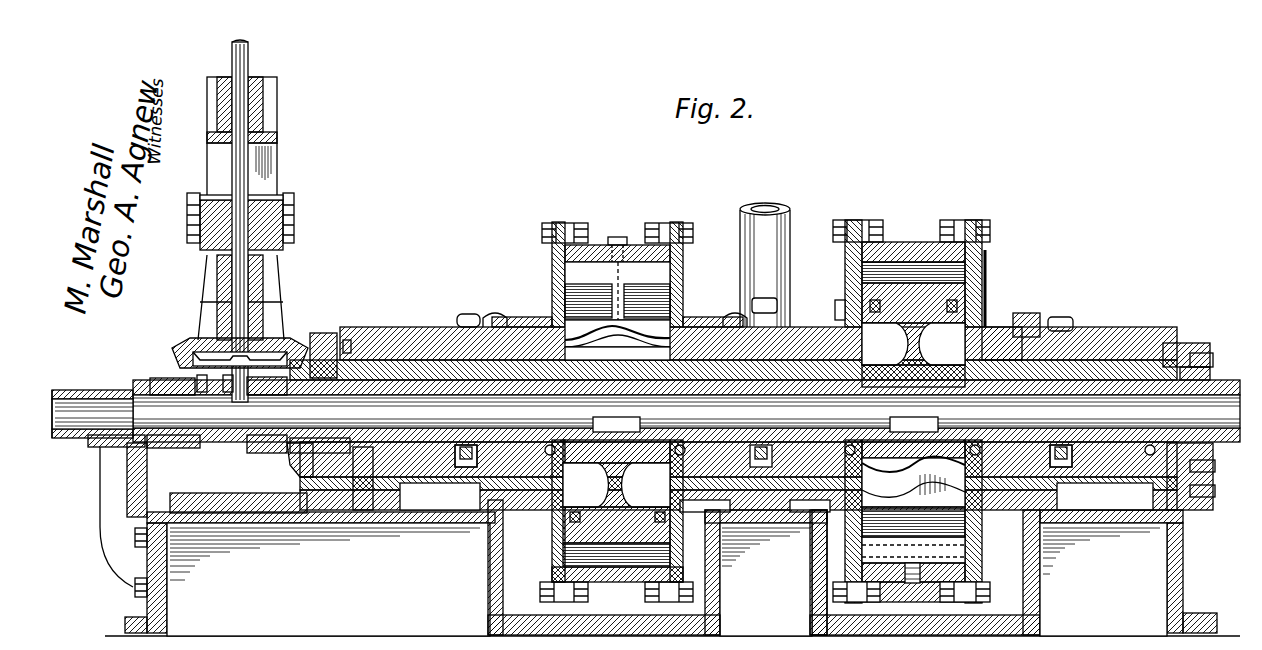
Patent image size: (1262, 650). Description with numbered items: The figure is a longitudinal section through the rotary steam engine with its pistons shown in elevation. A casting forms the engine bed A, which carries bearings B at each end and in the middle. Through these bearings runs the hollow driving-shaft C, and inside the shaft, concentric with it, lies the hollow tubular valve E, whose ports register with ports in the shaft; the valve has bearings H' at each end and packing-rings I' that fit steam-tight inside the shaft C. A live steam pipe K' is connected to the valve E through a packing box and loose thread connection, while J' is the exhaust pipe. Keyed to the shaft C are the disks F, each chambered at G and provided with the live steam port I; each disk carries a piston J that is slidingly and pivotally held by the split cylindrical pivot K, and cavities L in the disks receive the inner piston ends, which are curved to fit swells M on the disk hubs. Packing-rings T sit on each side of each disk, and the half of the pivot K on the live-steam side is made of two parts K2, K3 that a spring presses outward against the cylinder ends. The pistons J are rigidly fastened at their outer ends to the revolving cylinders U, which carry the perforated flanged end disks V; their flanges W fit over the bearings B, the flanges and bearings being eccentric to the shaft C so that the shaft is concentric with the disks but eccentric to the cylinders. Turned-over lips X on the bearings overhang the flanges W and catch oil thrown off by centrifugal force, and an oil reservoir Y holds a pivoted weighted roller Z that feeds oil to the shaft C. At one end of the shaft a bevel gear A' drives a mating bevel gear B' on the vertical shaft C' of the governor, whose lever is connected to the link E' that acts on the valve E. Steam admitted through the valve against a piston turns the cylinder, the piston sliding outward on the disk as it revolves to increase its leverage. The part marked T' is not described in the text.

The engine bed A is at (658, 535).
The bevel gear A' is at (291, 221).
The bearings B is at (746, 468).
The bevel gear B' is at (242, 348).
The hollow driving-shaft C is at (686, 433).
The vertical shaft C' is at (246, 208).
The hollow tubular valve E is at (517, 391).
The link E' is at (938, 324).
The disks F is at (906, 430).
The chamber G is at (975, 320).
The bearings H' is at (746, 417).
The live steam port I is at (839, 294).
The packing-rings I' is at (617, 388).
The piston J is at (765, 441).
The exhaust pipe J' is at (779, 256).
The pivot K is at (922, 554).
The live steam pipe K' is at (92, 393).
The pivot part K2 is at (580, 296).
The pivot part K3 is at (643, 296).
The cavities L is at (905, 458).
The swells M is at (874, 498).
The packing-rings T is at (771, 443).
The collar T' is at (1189, 426).
The revolving cylinders U is at (598, 250).
The flanged end disks V is at (553, 250).
The flanges W is at (535, 334).
The lips X is at (495, 318).
The oil reservoir Y is at (465, 458).
The weighted roller Z is at (1108, 486).